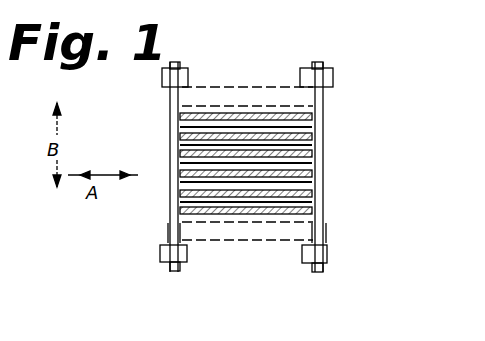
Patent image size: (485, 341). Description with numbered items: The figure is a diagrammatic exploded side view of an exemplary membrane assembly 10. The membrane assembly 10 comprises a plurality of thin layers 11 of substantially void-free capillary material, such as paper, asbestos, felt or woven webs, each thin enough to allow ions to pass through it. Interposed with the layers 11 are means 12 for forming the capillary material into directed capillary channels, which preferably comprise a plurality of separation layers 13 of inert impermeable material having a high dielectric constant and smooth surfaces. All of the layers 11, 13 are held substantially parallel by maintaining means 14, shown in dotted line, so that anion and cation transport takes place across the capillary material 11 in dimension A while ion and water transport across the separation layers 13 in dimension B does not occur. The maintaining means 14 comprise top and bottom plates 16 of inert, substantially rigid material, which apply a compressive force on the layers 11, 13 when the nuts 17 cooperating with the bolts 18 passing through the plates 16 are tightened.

The membrane assembly 10 is at (355, 77).
The layers of capillary material 11 is at (312, 182).
The means for forming directed capillary channels 12 is at (340, 128).
The separation layers 13 is at (178, 185).
The maintaining means 14 is at (202, 147).
The top and bottom plates 16 is at (258, 104).
The nuts 17 is at (164, 88).
The bolts 18 is at (320, 65).